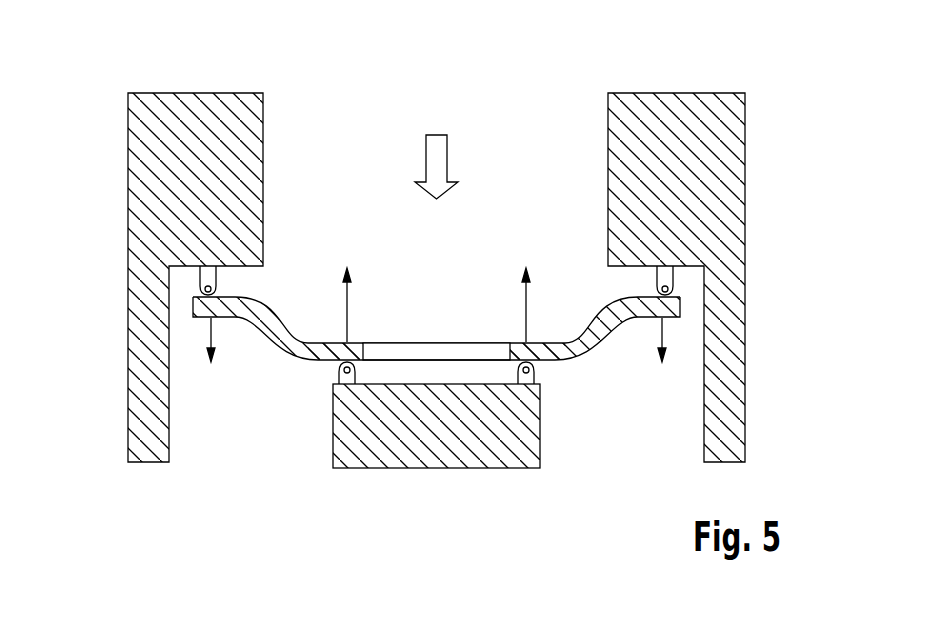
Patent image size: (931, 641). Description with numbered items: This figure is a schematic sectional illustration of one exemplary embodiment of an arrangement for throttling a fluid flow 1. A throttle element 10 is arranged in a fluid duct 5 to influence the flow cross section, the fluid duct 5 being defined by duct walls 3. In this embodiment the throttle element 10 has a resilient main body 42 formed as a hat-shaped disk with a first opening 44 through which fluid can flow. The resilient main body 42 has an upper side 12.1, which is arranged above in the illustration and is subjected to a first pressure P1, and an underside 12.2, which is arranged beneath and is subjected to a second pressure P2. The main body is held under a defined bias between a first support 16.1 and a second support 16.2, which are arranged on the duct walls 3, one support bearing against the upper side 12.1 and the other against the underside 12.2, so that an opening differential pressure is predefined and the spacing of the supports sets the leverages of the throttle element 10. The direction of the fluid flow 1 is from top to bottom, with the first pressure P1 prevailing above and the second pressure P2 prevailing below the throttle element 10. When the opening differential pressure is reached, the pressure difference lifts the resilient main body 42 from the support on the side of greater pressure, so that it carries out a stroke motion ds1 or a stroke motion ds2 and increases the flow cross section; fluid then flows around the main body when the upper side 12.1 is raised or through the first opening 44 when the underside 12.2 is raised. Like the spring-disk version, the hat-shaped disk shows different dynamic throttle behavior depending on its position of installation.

The fluid flow 1 is at (436, 146).
The duct walls 3 is at (148, 196).
The fluid duct 5 is at (313, 128).
The throttle element 10 is at (519, 78).
The upper side 12.1 is at (269, 298).
The underside 12.2 is at (257, 340).
The first support 16.1 is at (211, 279).
The second support 16.2 is at (340, 381).
The resilient main body 42 is at (304, 342).
The first opening 44 is at (433, 347).
The stroke motion ds1 is at (437, 355).
The stroke motion ds2 is at (436, 302).
The first pressure P1 is at (437, 279).
The second pressure P2 is at (436, 389).